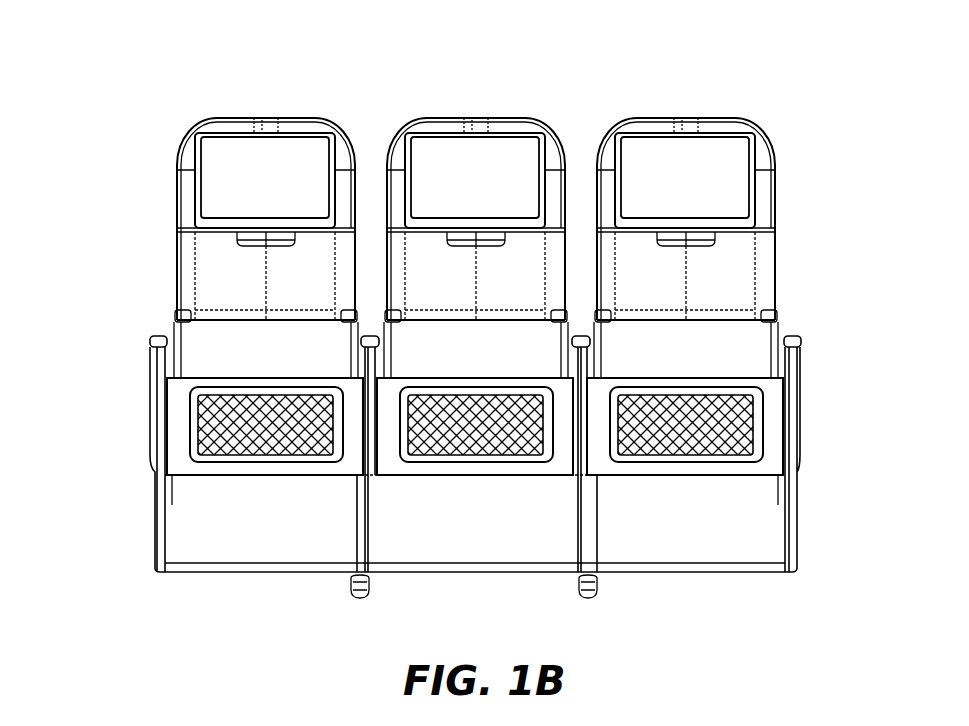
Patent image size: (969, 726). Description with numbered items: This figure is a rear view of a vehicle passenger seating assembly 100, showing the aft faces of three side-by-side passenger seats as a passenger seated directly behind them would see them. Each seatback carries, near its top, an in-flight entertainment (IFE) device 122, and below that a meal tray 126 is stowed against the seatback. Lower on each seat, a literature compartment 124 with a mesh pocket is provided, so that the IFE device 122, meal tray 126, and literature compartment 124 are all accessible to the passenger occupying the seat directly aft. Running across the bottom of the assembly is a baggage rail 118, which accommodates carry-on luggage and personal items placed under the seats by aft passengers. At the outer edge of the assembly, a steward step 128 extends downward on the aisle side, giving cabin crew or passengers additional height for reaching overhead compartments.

The passenger seating assembly 100 is at (128, 106).
The baggage rail 118 is at (723, 565).
The in-flight entertainment (IFE) device 122 is at (294, 173).
The literature compartment 124 is at (393, 465).
The meal tray 126 is at (723, 278).
The steward step 128 is at (783, 487).